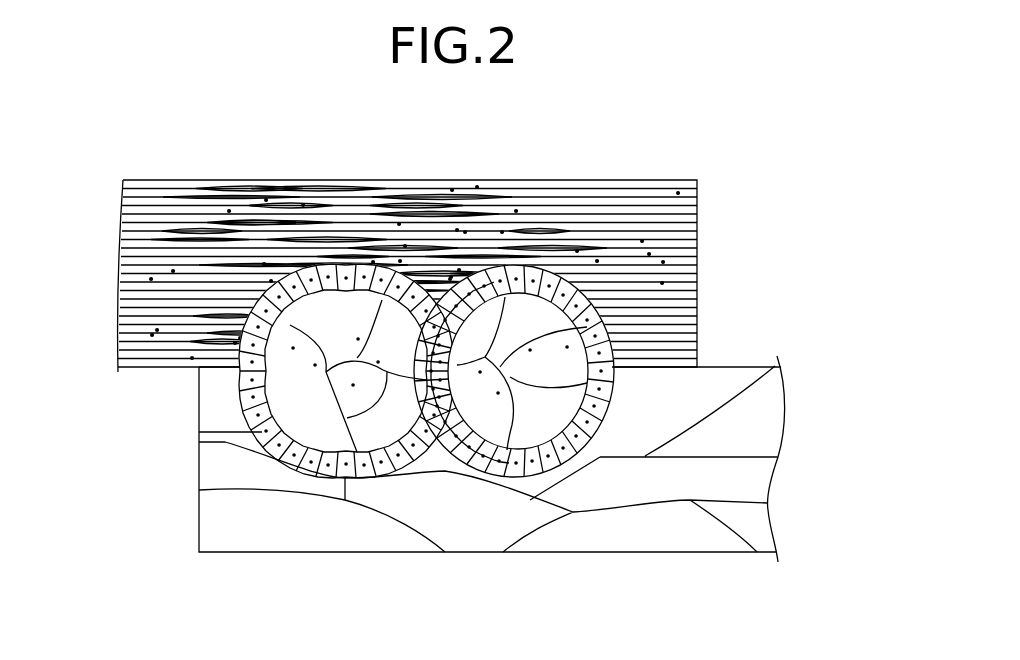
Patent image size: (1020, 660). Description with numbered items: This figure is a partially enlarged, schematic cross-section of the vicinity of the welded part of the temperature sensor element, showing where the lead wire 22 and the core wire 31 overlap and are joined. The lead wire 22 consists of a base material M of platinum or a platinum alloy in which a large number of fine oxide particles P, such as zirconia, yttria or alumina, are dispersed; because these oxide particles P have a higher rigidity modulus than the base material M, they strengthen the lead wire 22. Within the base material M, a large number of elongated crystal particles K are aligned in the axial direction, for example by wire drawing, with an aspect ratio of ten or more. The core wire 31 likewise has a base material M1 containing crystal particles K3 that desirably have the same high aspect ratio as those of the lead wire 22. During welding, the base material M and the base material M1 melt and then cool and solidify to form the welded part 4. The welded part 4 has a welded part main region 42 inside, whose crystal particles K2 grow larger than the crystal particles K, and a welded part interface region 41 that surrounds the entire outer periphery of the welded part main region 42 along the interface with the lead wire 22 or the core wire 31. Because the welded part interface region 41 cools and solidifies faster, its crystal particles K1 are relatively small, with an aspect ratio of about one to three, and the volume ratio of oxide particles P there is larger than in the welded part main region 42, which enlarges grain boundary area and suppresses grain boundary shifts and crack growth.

The lead wire 22 is at (425, 284).
The welded part 4 is at (545, 352).
The welded part interface region 41 is at (597, 305).
The welded part main region 42 is at (569, 368).
The core wire 31 is at (492, 498).
The base material M is at (295, 195).
The crystal particles K is at (437, 212).
The oxide particles P is at (592, 195).
The crystal particles K1 is at (315, 366).
The crystal particles K2 is at (486, 432).
The crystal particles K3 is at (585, 528).
The base material M1 is at (316, 538).